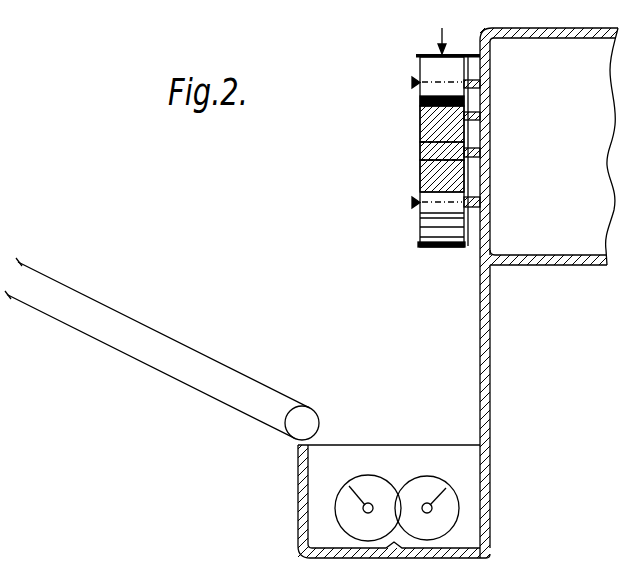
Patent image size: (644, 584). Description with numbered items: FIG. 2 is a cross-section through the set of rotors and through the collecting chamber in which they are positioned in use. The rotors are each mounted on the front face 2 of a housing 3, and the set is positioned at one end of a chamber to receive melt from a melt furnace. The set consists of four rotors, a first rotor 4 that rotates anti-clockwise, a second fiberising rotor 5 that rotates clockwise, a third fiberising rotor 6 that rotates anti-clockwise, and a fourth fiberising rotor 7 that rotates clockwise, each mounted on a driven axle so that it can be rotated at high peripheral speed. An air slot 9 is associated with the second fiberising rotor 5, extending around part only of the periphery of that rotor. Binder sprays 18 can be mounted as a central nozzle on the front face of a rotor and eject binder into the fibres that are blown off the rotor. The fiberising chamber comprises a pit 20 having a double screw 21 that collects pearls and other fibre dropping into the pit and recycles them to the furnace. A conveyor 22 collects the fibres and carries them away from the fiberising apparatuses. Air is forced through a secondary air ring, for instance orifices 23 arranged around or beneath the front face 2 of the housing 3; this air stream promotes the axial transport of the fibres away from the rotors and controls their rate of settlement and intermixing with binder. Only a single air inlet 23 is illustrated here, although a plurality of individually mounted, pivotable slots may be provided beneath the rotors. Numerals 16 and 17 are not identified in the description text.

The front face 2 is at (447, 130).
The housing 3 is at (598, 27).
The first rotor 4 is at (435, 73).
The second fiberising rotor 5 is at (435, 128).
The third fiberising rotor 6 is at (433, 173).
The fourth fiberising rotor 7 is at (433, 223).
The air slot 9 is at (488, 194).
The connecting members 16 is at (471, 53).
The cover plate 17 is at (419, 56).
The binder sprays 18 is at (422, 152).
The pit 20 is at (490, 387).
The double screw 21 is at (440, 507).
The conveyor 22 is at (126, 354).
The orifices 23 is at (480, 322).